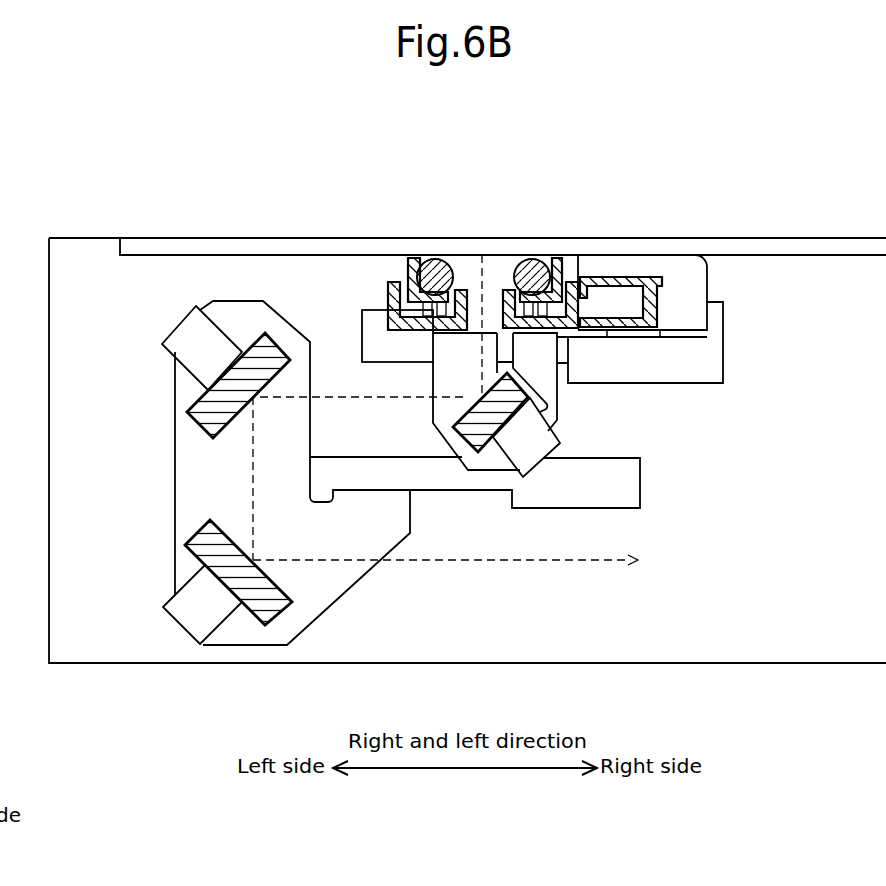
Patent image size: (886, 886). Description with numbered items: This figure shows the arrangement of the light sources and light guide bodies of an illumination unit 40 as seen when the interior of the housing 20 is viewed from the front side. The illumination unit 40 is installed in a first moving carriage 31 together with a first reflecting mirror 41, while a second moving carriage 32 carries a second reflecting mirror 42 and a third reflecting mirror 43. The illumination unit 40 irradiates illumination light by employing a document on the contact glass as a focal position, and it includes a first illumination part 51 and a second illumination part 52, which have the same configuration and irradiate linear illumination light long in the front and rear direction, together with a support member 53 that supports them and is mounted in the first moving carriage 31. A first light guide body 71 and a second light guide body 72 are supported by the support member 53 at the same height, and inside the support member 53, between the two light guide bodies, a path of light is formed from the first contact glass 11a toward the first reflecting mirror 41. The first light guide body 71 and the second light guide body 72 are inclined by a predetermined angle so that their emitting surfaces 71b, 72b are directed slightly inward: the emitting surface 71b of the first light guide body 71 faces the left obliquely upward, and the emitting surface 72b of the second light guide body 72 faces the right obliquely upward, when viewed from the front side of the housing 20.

The housing 20 is at (49, 300).
The first contact glass 11a is at (695, 245).
The first moving carriage 31 is at (712, 282).
The second moving carriage 32 is at (170, 375).
The illumination unit 40 is at (551, 232).
The first reflecting mirror 41 is at (460, 462).
The second reflecting mirror 42 is at (180, 434).
The third reflecting mirror 43 is at (201, 522).
The first illumination part 51 is at (577, 260).
The second illumination part 52 is at (420, 255).
The support member 53 is at (405, 268).
The first light guide body 71 is at (531, 332).
The emitting surface 71b is at (530, 260).
The second light guide body 72 is at (428, 334).
The emitting surface 72b is at (446, 260).